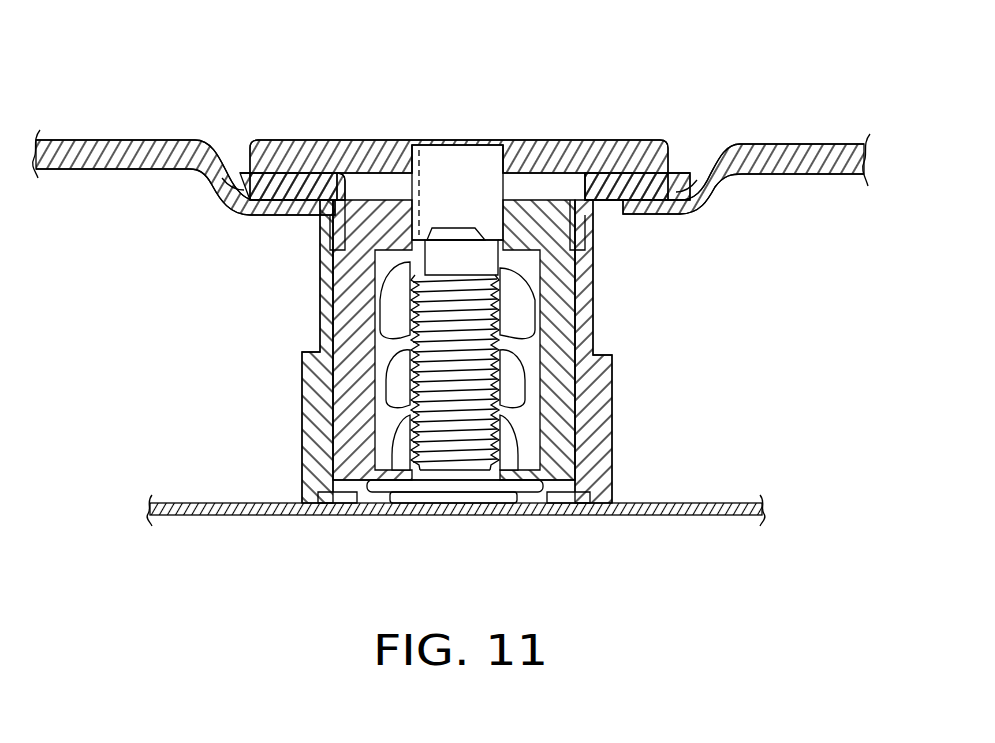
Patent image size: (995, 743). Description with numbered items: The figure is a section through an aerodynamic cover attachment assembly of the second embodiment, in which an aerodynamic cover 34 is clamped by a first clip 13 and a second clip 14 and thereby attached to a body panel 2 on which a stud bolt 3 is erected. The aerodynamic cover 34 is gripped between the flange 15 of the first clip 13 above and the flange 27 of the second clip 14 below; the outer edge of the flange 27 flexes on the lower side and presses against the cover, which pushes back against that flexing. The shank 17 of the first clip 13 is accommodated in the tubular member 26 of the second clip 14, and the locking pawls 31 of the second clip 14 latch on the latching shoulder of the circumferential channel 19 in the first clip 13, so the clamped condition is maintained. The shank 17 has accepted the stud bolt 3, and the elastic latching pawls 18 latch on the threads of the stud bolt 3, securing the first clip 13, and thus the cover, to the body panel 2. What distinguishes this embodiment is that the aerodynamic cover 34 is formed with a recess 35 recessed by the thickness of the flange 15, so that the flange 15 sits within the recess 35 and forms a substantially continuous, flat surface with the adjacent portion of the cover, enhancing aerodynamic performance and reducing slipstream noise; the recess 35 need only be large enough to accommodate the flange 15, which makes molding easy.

The body panel 2 is at (664, 506).
The stud bolt 3 is at (460, 470).
The first clip 13 is at (610, 138).
The second clip 14 is at (612, 334).
The flange 15 is at (318, 140).
The shank 17 is at (553, 385).
The elastic latching pawls 18 is at (400, 373).
The circumferential channel 19 is at (362, 168).
The tubular member 26 is at (598, 428).
The flange 27 is at (620, 216).
The locking pawls 31 is at (326, 233).
The aerodynamic cover 34 is at (97, 160).
The recess 35 is at (232, 140).